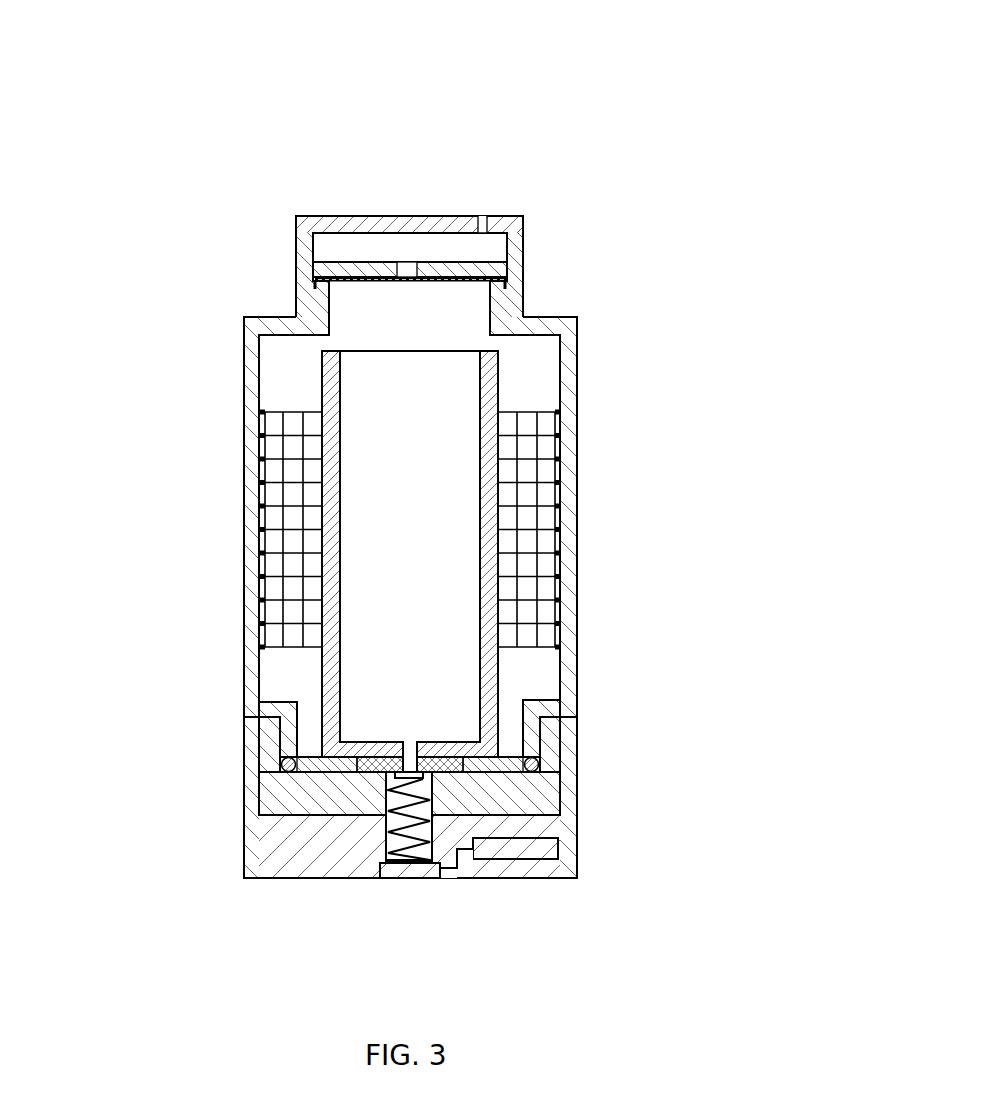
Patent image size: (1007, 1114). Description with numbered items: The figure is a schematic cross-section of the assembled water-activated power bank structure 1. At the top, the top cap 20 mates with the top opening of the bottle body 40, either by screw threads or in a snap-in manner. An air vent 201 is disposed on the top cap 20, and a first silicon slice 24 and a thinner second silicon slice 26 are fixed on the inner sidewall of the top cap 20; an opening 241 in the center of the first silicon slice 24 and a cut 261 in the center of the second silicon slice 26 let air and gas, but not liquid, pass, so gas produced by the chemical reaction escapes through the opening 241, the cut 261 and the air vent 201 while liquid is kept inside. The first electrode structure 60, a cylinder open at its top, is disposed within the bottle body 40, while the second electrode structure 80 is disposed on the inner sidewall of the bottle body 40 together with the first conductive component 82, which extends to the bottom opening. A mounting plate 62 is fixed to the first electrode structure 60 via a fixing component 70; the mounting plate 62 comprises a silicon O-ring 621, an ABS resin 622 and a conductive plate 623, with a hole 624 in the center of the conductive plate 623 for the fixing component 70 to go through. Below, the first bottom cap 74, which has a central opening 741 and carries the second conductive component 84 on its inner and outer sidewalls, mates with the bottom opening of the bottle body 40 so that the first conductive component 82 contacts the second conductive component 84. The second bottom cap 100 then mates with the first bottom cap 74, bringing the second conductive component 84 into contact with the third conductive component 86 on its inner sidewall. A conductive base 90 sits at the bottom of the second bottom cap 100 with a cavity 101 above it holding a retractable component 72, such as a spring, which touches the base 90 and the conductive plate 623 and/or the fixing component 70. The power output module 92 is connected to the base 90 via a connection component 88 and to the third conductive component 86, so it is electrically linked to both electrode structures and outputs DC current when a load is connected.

The water-activated power bank structure 1 is at (206, 155).
The top cap 20 is at (518, 238).
The air vent 201 is at (483, 220).
The first silicon slice 24 is at (500, 270).
The opening 241 is at (415, 268).
The second silicon slice 26 is at (507, 281).
The cut 261 is at (408, 278).
The bottle body 40 is at (572, 363).
The first electrode structure 60 is at (493, 390).
The second electrode structure 80 is at (538, 493).
The first conductive component 82 is at (552, 660).
The second conductive component 84 is at (552, 705).
The third conductive component 86 is at (552, 729).
The second bottom cap 100 is at (567, 767).
The first bottom cap 74 is at (547, 790).
The opening 741 is at (389, 792).
The power output module 92 is at (567, 848).
The connection component 88 is at (463, 858).
The base 90 is at (410, 870).
The cavity 101 is at (427, 845).
The retractable component 72 is at (387, 853).
The mounting plate 62 is at (311, 784).
The silicon O-ring 621 is at (283, 768).
The ABS resin 622 is at (310, 765).
The conductive plate 623 is at (372, 763).
The hole 624 is at (407, 760).
The fixing component 70 is at (410, 750).